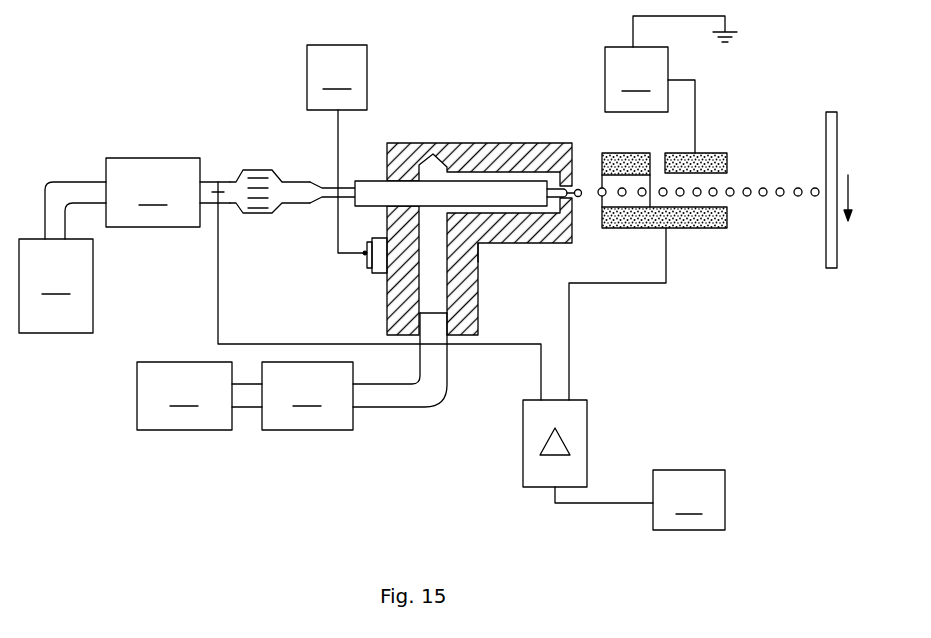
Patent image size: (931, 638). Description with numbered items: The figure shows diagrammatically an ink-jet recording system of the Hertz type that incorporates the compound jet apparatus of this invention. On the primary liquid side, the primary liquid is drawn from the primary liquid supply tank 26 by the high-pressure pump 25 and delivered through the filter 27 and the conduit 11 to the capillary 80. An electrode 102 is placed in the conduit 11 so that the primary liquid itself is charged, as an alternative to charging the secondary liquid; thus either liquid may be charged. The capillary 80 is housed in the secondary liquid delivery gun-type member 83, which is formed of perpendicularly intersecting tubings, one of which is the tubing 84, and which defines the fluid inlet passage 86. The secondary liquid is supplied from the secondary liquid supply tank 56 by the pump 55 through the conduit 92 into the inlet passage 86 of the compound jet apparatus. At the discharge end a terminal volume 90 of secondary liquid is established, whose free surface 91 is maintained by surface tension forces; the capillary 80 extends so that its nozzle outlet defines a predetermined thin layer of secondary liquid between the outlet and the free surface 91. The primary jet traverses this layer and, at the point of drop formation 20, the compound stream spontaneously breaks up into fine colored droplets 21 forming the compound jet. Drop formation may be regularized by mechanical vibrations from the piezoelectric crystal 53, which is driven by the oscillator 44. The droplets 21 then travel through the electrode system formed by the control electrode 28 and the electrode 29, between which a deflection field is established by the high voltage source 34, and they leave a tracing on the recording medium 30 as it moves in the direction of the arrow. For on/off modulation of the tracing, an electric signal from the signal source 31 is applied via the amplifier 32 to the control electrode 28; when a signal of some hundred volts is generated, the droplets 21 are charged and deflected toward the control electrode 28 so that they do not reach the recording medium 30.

The conduit 11 is at (300, 198).
The point of drop formation 20 is at (592, 167).
The fine droplets 21 is at (599, 198).
The high-pressure pump 25 is at (153, 192).
The primary liquid supply tank 26 is at (56, 286).
The filter 27 is at (262, 212).
The control electrode 28 is at (686, 230).
The electrode 29 is at (708, 150).
The recording medium 30 is at (832, 142).
The signal source 31 is at (689, 500).
The amplifier 32 is at (576, 418).
The high voltage source 34 is at (636, 79).
The oscillator 44 is at (337, 77).
The piezoelectric crystal 53 is at (368, 258).
The pump 55 is at (307, 396).
The secondary liquid supply tank 56 is at (184, 396).
The capillary 80 is at (455, 213).
The secondary liquid delivery gun-type member 83 is at (486, 265).
The tubing 84 is at (467, 311).
The fluid inlet passage 86 is at (430, 292).
The terminal volume 90 is at (558, 178).
The free surface 91 is at (581, 185).
The conduit 92 is at (392, 398).
The electrode 102 is at (220, 190).